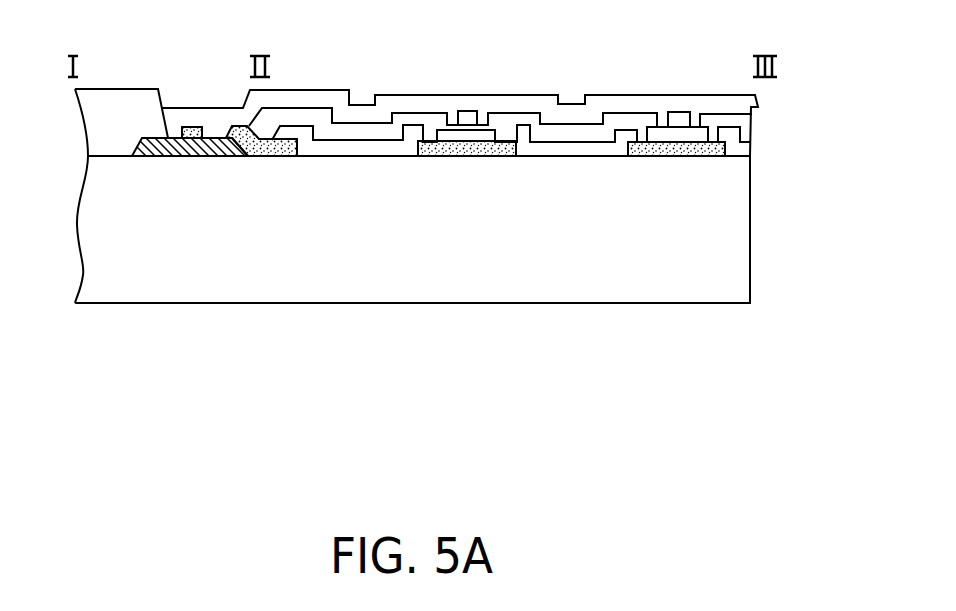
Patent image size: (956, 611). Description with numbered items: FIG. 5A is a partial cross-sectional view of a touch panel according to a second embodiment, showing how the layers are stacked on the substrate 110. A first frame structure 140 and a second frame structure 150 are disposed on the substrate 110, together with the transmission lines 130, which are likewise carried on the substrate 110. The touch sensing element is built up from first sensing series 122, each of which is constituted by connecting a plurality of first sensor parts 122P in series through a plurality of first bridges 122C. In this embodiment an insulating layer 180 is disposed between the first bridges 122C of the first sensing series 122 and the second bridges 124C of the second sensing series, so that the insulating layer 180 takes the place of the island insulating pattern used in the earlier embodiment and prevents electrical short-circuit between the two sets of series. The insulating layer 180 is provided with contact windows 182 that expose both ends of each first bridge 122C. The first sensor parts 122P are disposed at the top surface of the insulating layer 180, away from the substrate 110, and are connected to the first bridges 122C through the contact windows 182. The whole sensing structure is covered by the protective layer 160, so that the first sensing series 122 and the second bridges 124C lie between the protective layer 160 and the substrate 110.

The substrate 110 is at (237, 273).
The first sensing series 122 is at (556, 286).
The first sensor part 122P is at (393, 131).
The first bridge 122C is at (482, 143).
The second bridge 124C is at (463, 111).
The transmission line 130 is at (283, 157).
The first frame structure 140 is at (177, 140).
The second frame structure 150 is at (112, 142).
The protective layer 160 is at (312, 98).
The insulating layer 180 is at (342, 147).
The contact window 182 is at (503, 133).